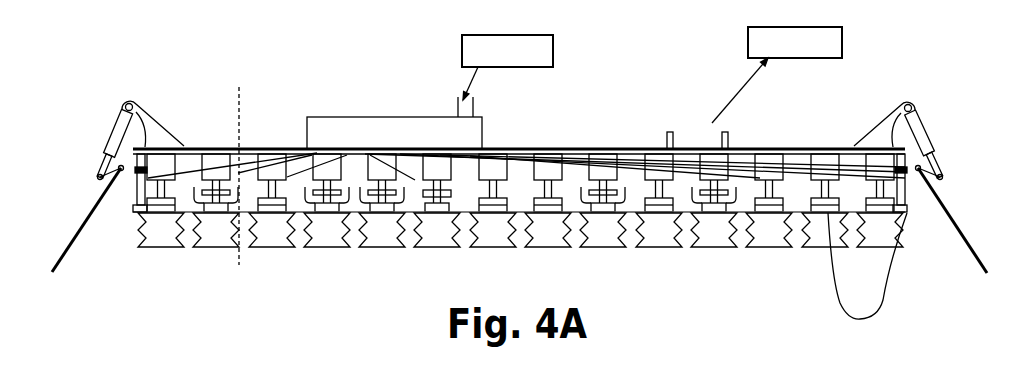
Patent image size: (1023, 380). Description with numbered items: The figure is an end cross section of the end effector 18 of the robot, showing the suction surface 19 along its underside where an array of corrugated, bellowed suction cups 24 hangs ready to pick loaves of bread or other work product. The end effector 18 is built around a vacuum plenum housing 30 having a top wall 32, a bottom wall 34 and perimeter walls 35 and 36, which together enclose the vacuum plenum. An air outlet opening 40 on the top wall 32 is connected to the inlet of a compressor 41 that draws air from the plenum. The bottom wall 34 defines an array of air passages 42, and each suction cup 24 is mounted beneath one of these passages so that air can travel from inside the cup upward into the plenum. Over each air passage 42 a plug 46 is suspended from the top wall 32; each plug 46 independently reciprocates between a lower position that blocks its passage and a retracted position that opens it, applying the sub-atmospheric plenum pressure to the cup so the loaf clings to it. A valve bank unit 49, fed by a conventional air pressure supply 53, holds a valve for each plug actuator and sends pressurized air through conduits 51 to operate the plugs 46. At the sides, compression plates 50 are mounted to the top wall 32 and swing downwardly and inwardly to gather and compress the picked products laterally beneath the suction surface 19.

The end effector 18 is at (582, 130).
The suction surface 19 is at (507, 250).
The suction cups 24 is at (828, 233).
The vacuum plenum housing 30 is at (610, 147).
The top wall 32 is at (533, 147).
The bottom wall 34 is at (352, 215).
The perimeter wall 35 is at (905, 185).
The perimeter wall 36 is at (140, 188).
The air outlet opening 40 is at (690, 133).
The compressor 41 is at (842, 46).
The air passages 42 is at (673, 198).
The plug 46 is at (487, 190).
The valve bank unit 49 is at (340, 117).
The compression plates 50 is at (80, 227).
The conduits 51 is at (302, 173).
The air pressure supply 53 is at (553, 47).